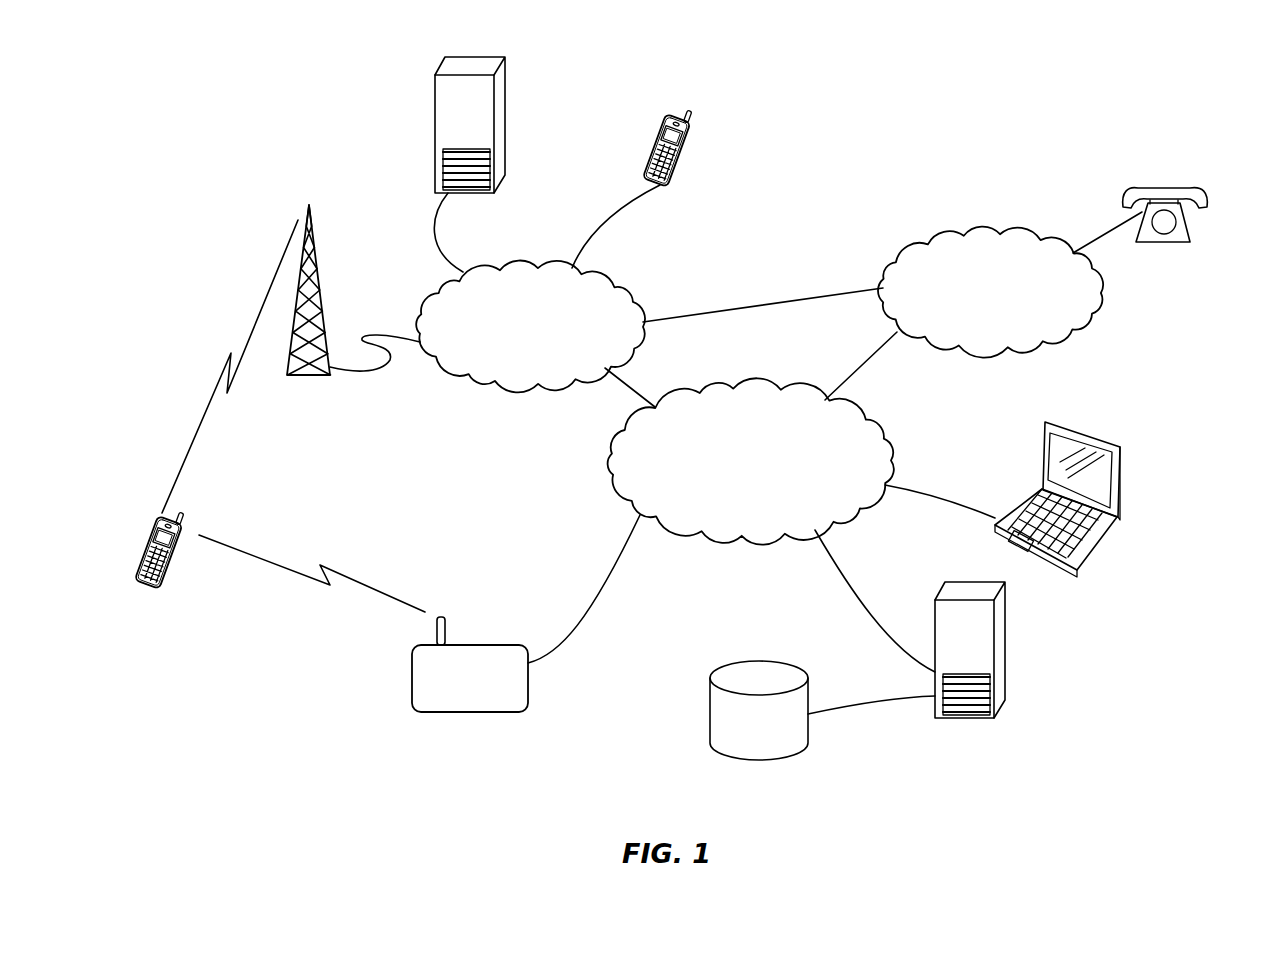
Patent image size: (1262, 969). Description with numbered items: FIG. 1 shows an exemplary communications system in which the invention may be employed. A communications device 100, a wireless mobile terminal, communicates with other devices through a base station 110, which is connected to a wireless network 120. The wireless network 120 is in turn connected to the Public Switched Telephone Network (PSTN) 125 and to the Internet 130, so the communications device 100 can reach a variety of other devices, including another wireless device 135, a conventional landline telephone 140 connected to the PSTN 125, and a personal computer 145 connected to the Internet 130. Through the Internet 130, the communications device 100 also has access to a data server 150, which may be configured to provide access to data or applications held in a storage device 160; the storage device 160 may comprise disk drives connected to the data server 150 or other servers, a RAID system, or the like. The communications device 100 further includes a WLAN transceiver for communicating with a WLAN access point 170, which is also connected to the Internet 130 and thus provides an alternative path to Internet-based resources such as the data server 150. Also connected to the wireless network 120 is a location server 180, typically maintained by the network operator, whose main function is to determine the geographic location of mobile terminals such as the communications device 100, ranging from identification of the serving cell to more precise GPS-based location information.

The communications device 100 is at (165, 577).
The base station 110 is at (320, 297).
The wireless network 120 is at (515, 357).
The Public Switched Telephone Network (PSTN) 125 is at (975, 311).
The Internet 130 is at (733, 487).
The wireless device 135 is at (680, 165).
The conventional landline telephone 140 is at (1171, 185).
The personal computer 145 is at (1125, 470).
The data server 150 is at (1005, 622).
The storage device 160 is at (810, 730).
The WLAN access point 170 is at (493, 712).
The location server 180 is at (506, 100).